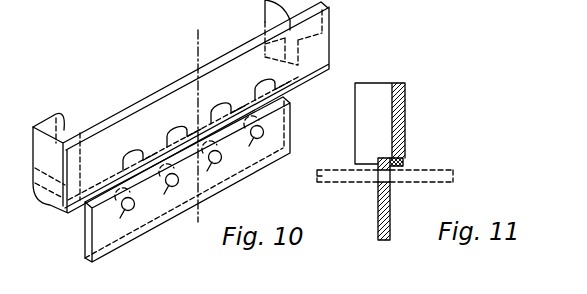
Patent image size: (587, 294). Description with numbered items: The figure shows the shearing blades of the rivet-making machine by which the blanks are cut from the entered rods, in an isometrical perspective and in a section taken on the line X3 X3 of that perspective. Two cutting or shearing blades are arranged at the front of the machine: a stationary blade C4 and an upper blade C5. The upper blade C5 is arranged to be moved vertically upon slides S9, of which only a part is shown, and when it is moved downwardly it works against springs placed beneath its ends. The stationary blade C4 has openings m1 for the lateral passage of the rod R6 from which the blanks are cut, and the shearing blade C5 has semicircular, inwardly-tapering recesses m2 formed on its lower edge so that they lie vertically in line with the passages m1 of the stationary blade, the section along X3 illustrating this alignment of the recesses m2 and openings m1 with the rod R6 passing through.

In FIG. 10, the upper shearing blade C5 is at (181, 107).
In FIG. 11, the upper shearing blade C5 is at (405, 127).
In FIG. 10, the stationary shearing blade C4 is at (187, 179).
In FIG. 11, the stationary shearing blade C4 is at (390, 211).
In FIG. 10, the slides S9 is at (78, 125).
In FIG. 10, the section line x3 x3 X3 is at (196, 129).
In FIG. 10, the openings m1 is at (189, 167).
In FIG. 10, the semicircular recesses m2 is at (184, 135).
In FIG. 11, the rod R6 is at (427, 172).